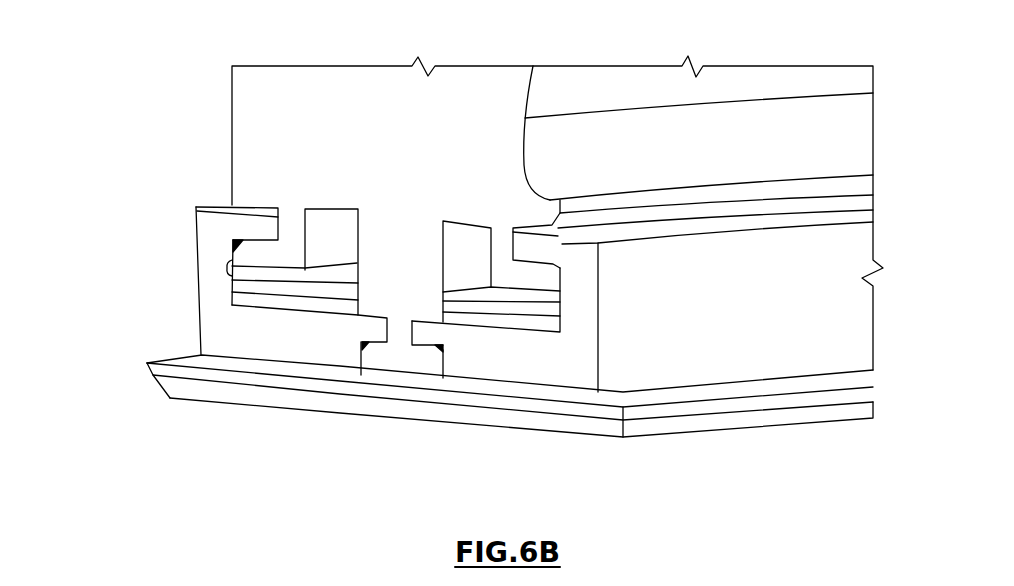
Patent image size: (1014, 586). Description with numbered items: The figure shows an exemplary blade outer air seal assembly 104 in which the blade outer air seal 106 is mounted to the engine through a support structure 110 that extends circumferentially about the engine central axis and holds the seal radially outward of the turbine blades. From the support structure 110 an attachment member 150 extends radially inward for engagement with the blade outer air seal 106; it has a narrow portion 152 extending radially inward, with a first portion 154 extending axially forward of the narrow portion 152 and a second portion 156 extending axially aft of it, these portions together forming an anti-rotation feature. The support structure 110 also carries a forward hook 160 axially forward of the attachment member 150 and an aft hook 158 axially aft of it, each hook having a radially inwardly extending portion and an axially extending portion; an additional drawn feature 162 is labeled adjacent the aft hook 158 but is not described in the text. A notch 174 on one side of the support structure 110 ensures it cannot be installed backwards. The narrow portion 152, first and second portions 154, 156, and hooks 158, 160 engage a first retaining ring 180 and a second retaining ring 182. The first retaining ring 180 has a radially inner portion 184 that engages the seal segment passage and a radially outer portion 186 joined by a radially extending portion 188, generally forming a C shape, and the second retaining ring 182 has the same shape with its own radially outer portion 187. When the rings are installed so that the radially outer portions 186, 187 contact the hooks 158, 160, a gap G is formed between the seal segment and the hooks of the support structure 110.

The blade outer air seal assembly 104 is at (113, 62).
The support structure 110 is at (242, 95).
The notch 174 is at (540, 195).
The radially outer portion 186 is at (537, 252).
The radially extending portion 188 is at (533, 358).
The rail 162 is at (558, 263).
The radially inner portion 184 is at (587, 316).
The radially outer portion 187 is at (245, 222).
The second retaining ring 182 is at (202, 337).
The gap G is at (227, 268).
The forward hook 160 is at (262, 250).
The first portion 154 is at (362, 358).
The narrow portion 152 is at (385, 363).
The second portion 156 is at (428, 350).
The aft hook 158 is at (536, 278).
The attachment member 150 is at (418, 257).
The blade outer air seal 106 is at (147, 363).
The first retaining ring 180 is at (587, 368).